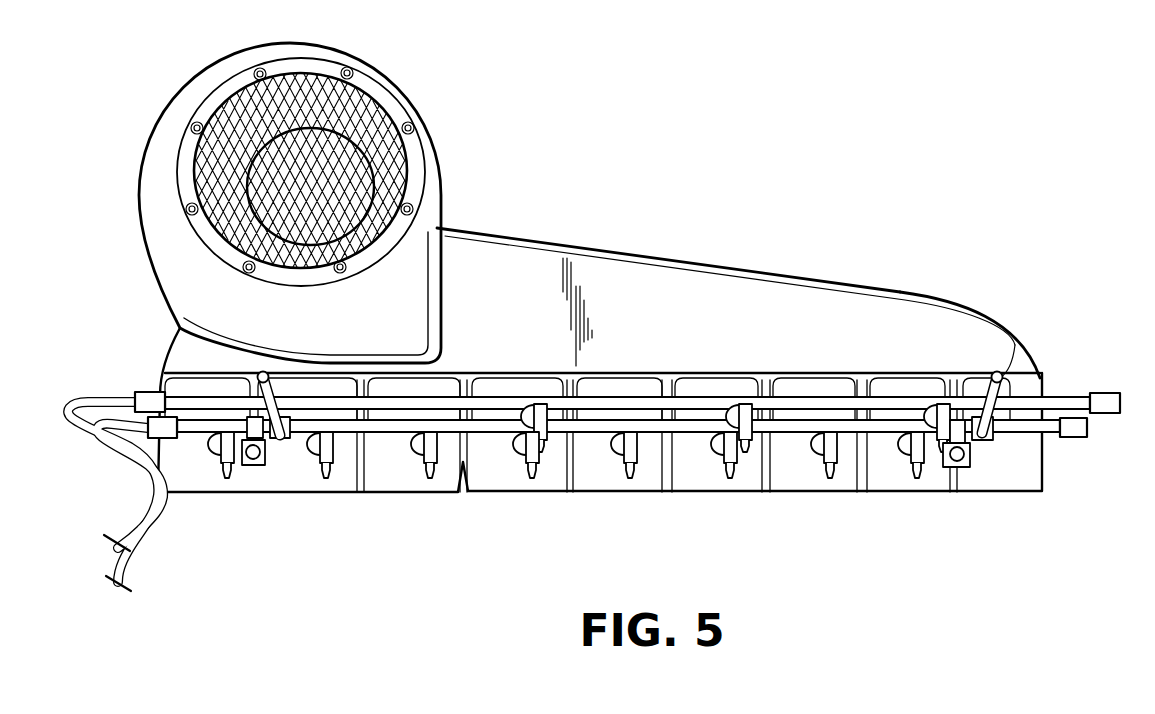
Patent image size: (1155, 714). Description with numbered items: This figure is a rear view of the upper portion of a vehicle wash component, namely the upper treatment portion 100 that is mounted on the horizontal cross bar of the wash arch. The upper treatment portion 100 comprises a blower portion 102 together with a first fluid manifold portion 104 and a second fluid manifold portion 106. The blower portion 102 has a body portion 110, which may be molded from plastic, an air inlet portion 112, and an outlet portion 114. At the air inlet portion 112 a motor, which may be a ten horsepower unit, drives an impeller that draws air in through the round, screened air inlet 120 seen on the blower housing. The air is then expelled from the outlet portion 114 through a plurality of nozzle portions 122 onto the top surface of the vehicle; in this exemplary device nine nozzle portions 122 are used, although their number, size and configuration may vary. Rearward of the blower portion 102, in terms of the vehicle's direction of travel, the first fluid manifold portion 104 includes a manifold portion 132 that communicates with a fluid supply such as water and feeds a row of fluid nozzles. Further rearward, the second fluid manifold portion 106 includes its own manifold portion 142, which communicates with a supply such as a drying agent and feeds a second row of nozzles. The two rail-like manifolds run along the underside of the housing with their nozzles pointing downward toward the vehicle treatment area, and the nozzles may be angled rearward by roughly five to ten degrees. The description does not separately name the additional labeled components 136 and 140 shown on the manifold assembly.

The upper treatment portion 100 is at (650, 253).
The blower portion 102 is at (835, 310).
The first fluid manifold portion 104 is at (590, 428).
The second fluid manifold portion 106 is at (493, 373).
The body portion 110 is at (707, 295).
The air inlet portion 112 is at (380, 52).
The outlet portion 114 is at (198, 502).
The air inlet 120 is at (320, 122).
The nozzle portions 122 is at (253, 467).
The manifold portion 132 is at (403, 428).
The fuel injectors 136 is at (532, 478).
The upper fuel rail 140 is at (782, 403).
The manifold portion 142 is at (750, 455).